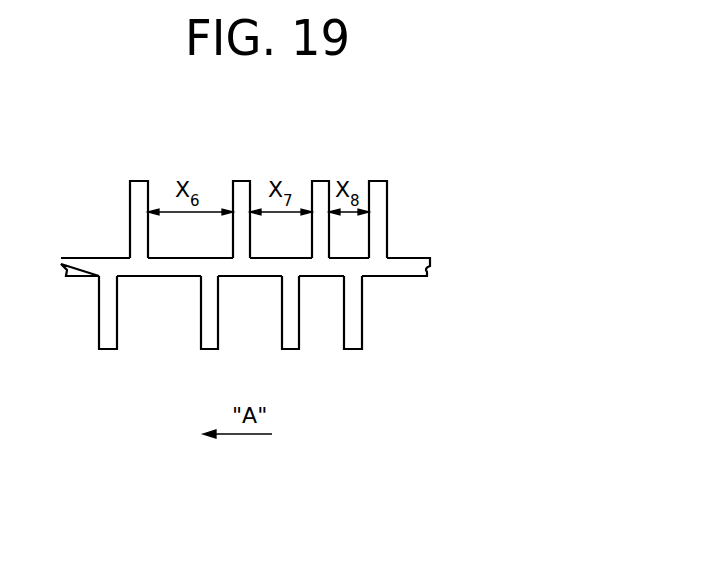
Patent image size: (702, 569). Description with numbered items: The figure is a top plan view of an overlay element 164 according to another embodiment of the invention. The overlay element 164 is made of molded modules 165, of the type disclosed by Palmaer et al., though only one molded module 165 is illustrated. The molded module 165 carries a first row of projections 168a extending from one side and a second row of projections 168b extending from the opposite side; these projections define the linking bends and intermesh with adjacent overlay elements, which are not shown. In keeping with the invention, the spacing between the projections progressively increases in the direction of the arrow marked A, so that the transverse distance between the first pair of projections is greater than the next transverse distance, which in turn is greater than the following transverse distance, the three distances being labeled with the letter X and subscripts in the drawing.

The overlay element 164 is at (406, 146).
The molded module 165 is at (412, 266).
The first row of projections 168a is at (318, 174).
The second row of projections 168b is at (214, 357).